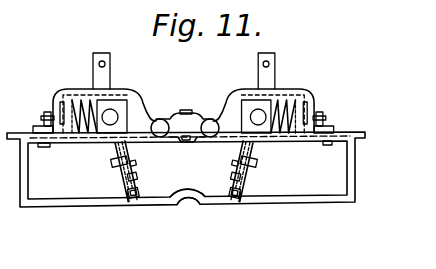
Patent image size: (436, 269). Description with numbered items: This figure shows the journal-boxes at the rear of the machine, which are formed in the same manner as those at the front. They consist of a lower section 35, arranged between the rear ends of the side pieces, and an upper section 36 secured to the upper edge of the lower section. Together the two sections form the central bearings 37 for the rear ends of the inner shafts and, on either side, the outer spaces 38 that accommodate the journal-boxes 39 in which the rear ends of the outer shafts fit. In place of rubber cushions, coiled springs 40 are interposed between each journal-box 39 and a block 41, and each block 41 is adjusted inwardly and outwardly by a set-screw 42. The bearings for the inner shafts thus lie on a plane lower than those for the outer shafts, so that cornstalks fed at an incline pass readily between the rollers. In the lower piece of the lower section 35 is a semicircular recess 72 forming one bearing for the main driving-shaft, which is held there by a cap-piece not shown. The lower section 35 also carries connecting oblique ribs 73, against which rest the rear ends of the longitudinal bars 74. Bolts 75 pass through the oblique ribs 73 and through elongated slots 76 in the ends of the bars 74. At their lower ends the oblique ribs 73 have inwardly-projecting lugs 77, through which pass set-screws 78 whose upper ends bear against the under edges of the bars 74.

The lower section 35 is at (98, 200).
The upper section 36 is at (235, 107).
The central bearings 37 is at (158, 118).
The outer spaces 38 is at (133, 104).
The journal-boxes 39 is at (105, 131).
The coiled springs 40 is at (83, 103).
The blocks 41 is at (62, 108).
The set-screws 42 is at (42, 115).
The semicircular recess 72 is at (188, 203).
The oblique ribs 73 is at (116, 173).
The longitudinal bars 74 is at (138, 177).
The bolts 75 is at (127, 158).
The elongated slots 76 is at (133, 163).
The inwardly-projecting lugs 77 is at (127, 198).
The set-screws 78 is at (136, 199).